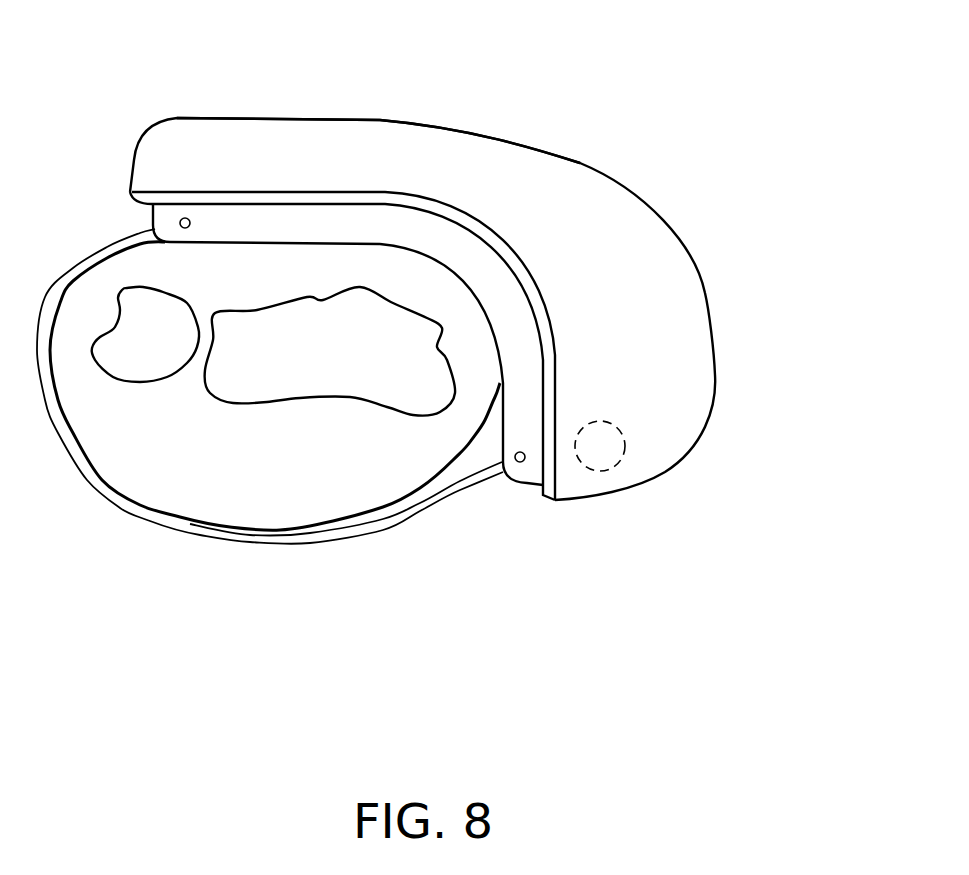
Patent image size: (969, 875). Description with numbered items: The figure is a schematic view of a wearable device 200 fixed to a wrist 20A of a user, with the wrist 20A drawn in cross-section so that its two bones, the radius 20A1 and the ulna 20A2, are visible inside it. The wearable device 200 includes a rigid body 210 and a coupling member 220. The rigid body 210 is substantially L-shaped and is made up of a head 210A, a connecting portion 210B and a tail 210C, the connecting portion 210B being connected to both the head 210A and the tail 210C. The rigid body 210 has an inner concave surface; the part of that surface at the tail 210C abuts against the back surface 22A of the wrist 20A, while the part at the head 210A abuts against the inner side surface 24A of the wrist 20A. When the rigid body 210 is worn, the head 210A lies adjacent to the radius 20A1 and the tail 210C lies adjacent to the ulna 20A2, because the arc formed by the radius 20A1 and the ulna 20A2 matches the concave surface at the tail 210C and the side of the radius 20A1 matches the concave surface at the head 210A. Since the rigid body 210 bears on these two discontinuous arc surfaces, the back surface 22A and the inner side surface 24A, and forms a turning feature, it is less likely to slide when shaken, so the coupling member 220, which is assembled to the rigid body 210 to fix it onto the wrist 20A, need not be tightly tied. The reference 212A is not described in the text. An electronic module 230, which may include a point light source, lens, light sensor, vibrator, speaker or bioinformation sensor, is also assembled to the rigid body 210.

The wearable device 200 is at (712, 485).
The rigid body 210 is at (805, 175).
The head 210A is at (648, 353).
The connecting portion 210B is at (623, 252).
The tail 210C is at (387, 155).
The curved edge of hinge plate 212A is at (477, 294).
The back surface 22A is at (277, 258).
The inner side surface 24A is at (501, 381).
The wrist 20A is at (390, 473).
The radius 20A1 is at (275, 383).
The ulna 20A2 is at (140, 363).
The coupling member 220 is at (320, 537).
The electronic module 230 is at (595, 471).